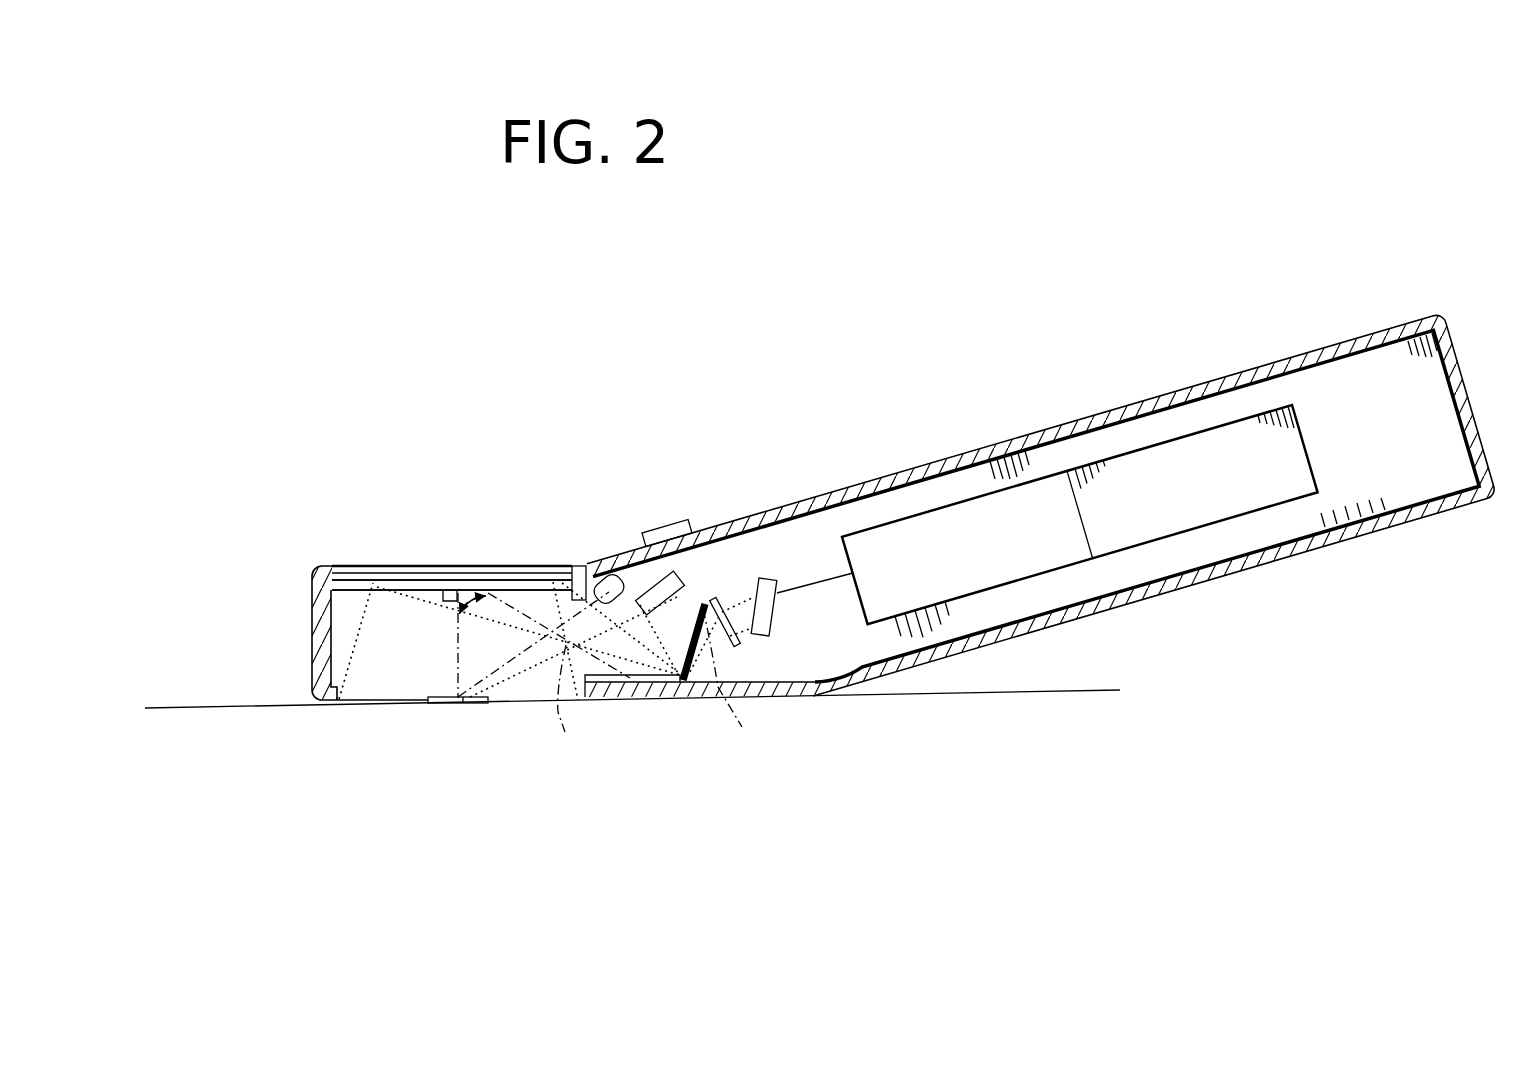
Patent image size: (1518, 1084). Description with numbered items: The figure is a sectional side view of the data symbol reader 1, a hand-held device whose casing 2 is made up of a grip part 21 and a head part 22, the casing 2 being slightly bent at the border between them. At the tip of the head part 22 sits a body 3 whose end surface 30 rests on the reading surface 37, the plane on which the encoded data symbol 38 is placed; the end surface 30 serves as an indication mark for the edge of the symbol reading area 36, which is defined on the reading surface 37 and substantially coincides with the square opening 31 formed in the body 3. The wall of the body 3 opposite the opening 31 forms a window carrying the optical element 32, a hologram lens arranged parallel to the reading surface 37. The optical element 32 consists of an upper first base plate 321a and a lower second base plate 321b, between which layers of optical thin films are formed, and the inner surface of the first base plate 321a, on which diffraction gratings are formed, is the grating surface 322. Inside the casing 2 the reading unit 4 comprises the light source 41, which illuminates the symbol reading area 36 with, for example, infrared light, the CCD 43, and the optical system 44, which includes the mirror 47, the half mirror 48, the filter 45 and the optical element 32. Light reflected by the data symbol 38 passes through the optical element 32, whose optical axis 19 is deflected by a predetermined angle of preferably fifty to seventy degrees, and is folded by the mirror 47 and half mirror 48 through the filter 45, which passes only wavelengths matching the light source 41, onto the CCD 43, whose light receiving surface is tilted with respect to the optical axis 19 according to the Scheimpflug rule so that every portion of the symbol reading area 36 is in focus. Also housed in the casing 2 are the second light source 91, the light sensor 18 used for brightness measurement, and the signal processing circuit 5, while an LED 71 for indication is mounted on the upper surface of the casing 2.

The data symbol reader 1 is at (905, 323).
The casing 2 is at (1063, 372).
The grip part 21 is at (1148, 397).
The head part 22 is at (299, 566).
The body 3 is at (311, 640).
The end surface 30 is at (327, 705).
The opening 31 is at (520, 708).
The optical element 32 is at (367, 566).
The first base plate 321a is at (468, 566).
The second base plate 321b is at (515, 580).
The grating surface 322 is at (404, 580).
The symbol reading area 36 is at (383, 707).
The reading surface 37 is at (247, 710).
The encoded data symbol 38 is at (468, 704).
The light sensor 18 is at (572, 565).
The second light source 91 is at (604, 577).
The light source 41 is at (642, 572).
The LED 71 is at (672, 527).
The optical system 44 is at (703, 581).
The reading unit 4 is at (738, 556).
The CCD 43 is at (778, 612).
The filter 45 is at (740, 640).
The mirror 47 is at (632, 683).
The half mirror 48 is at (697, 690).
The signal processing circuit 5 is at (1080, 560).
The optical axis 19 is at (455, 668).